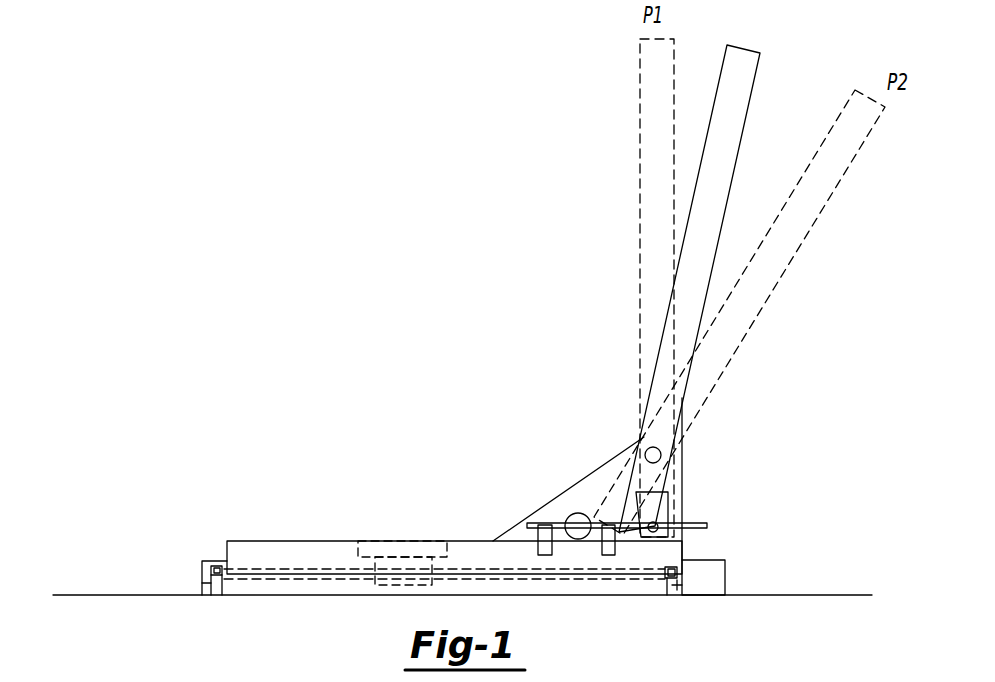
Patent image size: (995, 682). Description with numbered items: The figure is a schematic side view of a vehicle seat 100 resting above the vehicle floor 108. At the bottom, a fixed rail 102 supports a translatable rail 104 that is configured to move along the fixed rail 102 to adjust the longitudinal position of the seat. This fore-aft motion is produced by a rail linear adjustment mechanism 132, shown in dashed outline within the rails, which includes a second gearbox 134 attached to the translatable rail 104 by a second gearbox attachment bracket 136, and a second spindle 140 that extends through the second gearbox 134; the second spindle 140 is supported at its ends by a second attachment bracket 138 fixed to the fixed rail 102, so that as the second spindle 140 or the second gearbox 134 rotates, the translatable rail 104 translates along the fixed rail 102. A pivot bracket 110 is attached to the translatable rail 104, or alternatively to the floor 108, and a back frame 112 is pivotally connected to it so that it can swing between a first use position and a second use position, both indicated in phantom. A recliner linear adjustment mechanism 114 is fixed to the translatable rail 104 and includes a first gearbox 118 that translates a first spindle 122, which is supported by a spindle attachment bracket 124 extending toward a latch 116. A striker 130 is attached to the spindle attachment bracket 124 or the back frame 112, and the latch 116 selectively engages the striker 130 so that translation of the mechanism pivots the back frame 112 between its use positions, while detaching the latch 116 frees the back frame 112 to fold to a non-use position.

The vehicle seat 100 is at (398, 105).
The fixed rail 102 is at (717, 582).
The translatable rail 104 is at (263, 555).
The vehicle floor 108 is at (102, 595).
The pivot bracket 110 is at (578, 490).
The back frame 112 is at (750, 63).
The recliner linear adjustment mechanism 114 is at (493, 450).
The latch 116 is at (657, 503).
The first gearbox 118 is at (571, 517).
The first spindle 122 is at (582, 527).
The spindle attachment bracket 124 is at (545, 524).
The striker 130 is at (660, 527).
The rail linear adjustment mechanism 132 is at (353, 468).
The second gearbox 134 is at (382, 563).
The second gearbox attachment bracket 136 is at (405, 552).
The second attachment bracket 138 is at (203, 583).
The second spindle 140 is at (478, 570).